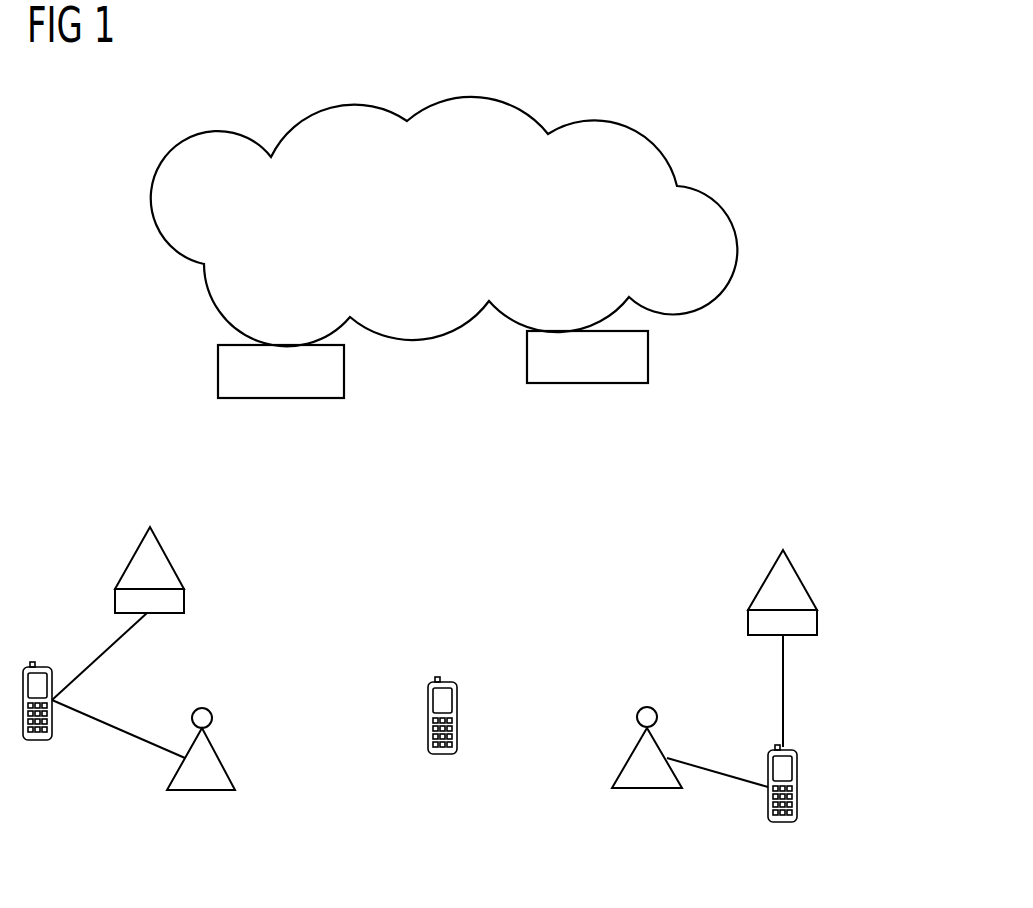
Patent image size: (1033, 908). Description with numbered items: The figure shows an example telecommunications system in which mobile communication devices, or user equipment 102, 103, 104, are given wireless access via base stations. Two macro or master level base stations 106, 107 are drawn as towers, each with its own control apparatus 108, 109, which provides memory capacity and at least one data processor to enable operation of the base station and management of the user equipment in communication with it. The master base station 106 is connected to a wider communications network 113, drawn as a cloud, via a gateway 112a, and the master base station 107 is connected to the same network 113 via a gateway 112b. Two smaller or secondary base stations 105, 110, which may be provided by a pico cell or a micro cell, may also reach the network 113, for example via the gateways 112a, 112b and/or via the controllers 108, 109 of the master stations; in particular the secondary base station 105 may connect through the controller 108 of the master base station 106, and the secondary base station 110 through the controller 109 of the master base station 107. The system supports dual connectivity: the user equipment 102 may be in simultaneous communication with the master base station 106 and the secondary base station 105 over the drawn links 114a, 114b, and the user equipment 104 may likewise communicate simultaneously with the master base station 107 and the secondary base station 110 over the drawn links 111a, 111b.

The user equipment 102 is at (36, 741).
The user equipment 103 is at (427, 717).
The user equipment 104 is at (798, 787).
The secondary base station 105 is at (222, 758).
The master base station 106 is at (140, 563).
The master base station 107 is at (773, 583).
The control apparatus 108 is at (177, 602).
The control apparatus 109 is at (755, 622).
The secondary base station 110 is at (627, 757).
The communication link 111a is at (782, 682).
The communication link 111b is at (718, 770).
The gateway 112a is at (344, 369).
The gateway 112b is at (648, 360).
The wider communications network 113 is at (473, 95).
The communication link 114a is at (100, 655).
The communication link 114b is at (118, 728).